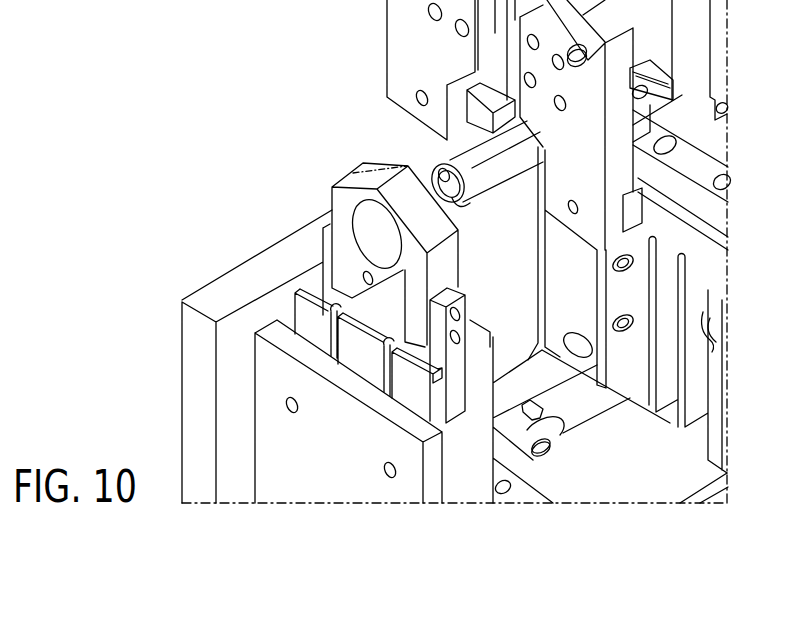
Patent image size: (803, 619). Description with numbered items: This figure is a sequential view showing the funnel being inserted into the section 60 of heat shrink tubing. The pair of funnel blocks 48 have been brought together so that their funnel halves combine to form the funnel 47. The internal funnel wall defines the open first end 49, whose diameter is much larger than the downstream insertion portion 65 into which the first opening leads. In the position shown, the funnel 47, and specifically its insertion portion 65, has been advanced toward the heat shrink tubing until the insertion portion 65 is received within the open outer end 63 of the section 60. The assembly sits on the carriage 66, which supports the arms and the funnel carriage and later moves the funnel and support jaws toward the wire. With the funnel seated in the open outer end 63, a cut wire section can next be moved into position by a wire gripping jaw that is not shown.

The funnel 47 is at (358, 256).
The funnel block 48 is at (343, 246).
The open first end 49 is at (345, 207).
The section of heat shrink tubing 60 is at (455, 160).
The open outer end 63 is at (440, 170).
The insertion portion 65 is at (455, 205).
The carriage 66 is at (618, 477).